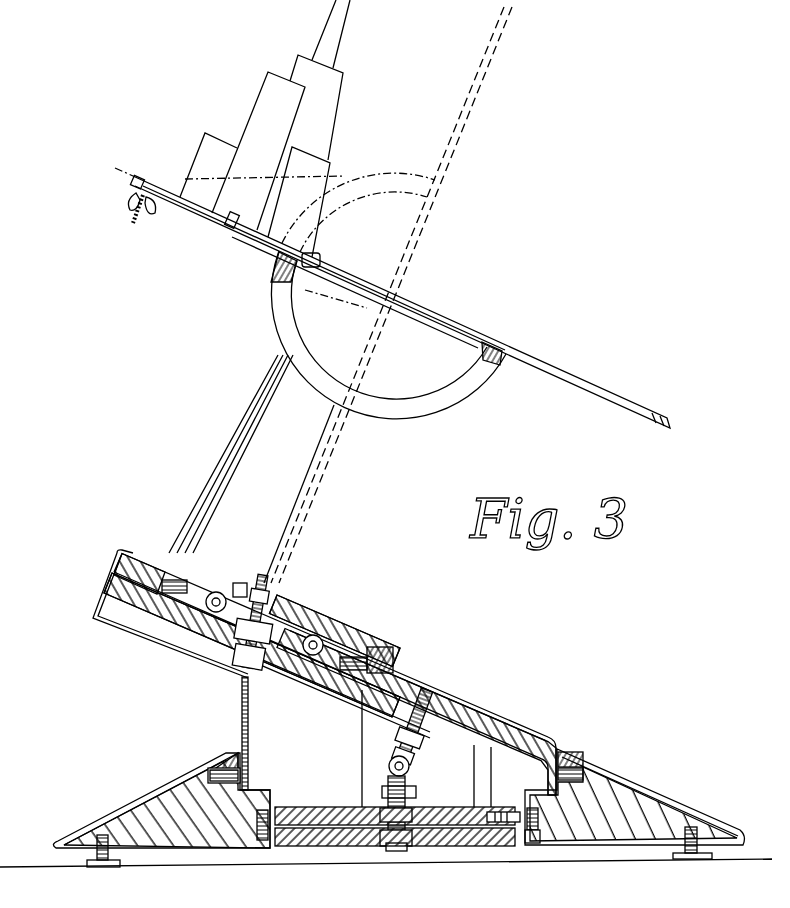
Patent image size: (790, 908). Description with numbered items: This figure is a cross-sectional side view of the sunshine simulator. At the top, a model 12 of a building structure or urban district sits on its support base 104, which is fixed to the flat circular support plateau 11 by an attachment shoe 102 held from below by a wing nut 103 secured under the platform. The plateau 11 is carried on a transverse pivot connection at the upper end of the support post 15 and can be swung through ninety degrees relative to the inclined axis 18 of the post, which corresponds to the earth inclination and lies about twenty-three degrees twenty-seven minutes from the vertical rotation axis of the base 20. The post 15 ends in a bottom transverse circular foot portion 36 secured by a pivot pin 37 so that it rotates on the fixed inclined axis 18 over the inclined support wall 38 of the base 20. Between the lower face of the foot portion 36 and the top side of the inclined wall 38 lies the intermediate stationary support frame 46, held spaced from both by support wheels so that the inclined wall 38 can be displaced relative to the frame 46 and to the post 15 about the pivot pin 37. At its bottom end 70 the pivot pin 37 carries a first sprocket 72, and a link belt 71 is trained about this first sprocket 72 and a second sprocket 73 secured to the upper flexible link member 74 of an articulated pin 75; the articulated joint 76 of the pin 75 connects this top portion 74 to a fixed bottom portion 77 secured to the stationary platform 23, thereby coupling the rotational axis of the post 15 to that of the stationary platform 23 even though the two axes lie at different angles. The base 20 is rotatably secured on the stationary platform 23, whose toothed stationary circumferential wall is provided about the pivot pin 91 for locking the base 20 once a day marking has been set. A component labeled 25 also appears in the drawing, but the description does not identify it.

The support plateau 11 is at (463, 124).
The model 12 is at (247, 92).
The support post 15 is at (240, 443).
The inclined axis 18 is at (233, 698).
The base 20 is at (506, 716).
The stationary platform 23 is at (591, 835).
The universal joint 25 is at (384, 759).
The circular foot portion 36 is at (364, 640).
The pivot pin 37 is at (277, 596).
The inclined support wall 38 is at (400, 675).
The intermediate stationary support frame 46 is at (297, 640).
The bottom end 70 is at (237, 664).
The link belt 71 is at (337, 698).
The first sprocket 72 is at (247, 680).
The second sprocket 73 is at (423, 738).
The upper flexible link member 74 is at (406, 764).
The articulated pin 75 is at (430, 700).
The articulated joint 76 is at (412, 790).
The fixed bottom portion 77 is at (388, 792).
The pivot pin 91 is at (390, 852).
The attachment shoe 102 is at (151, 174).
The wing nut 103 is at (146, 220).
The support base 104 is at (233, 228).